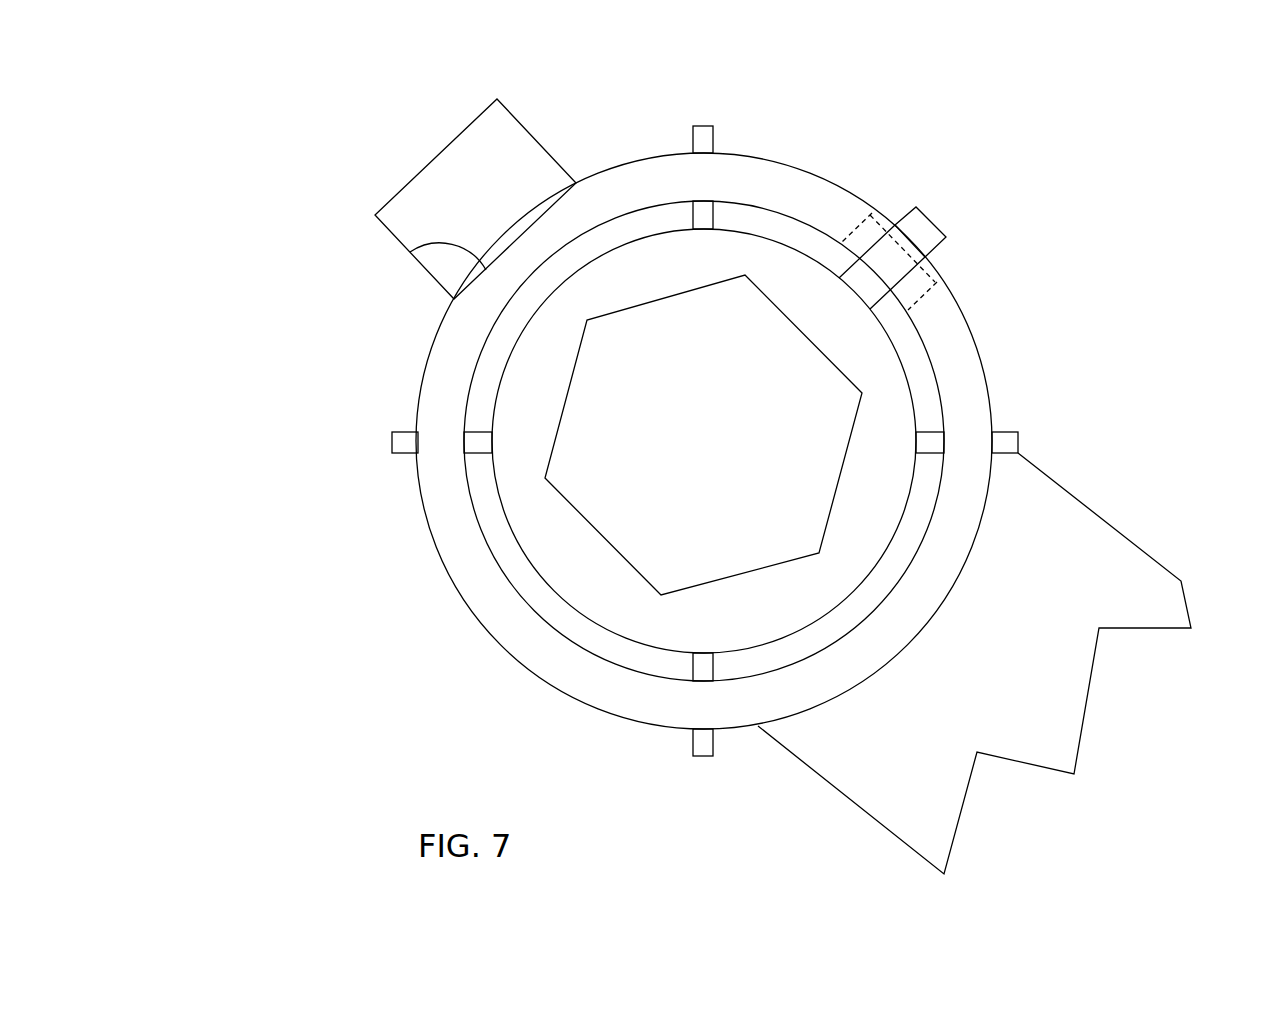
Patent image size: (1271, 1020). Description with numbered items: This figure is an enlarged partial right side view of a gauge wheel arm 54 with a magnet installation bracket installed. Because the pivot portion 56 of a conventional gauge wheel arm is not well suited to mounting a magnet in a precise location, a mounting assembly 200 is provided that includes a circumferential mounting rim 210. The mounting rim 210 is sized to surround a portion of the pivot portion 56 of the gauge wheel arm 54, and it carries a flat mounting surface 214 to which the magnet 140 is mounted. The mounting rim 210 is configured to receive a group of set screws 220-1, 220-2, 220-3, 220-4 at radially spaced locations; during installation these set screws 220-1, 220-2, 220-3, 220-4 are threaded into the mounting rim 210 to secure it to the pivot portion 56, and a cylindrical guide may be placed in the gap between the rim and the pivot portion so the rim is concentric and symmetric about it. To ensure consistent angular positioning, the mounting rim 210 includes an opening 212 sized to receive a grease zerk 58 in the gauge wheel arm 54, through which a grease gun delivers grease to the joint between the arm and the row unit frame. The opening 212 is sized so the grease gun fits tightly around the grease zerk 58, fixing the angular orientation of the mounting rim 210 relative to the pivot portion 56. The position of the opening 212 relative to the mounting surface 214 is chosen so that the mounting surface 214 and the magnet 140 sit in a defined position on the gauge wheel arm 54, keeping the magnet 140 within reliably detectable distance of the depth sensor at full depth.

The mounting assembly 200 is at (239, 278).
The mounting rim 210 is at (515, 662).
The pivot portion 56 is at (503, 375).
The set screw 220-1 is at (405, 453).
The set screw 220-2 is at (713, 140).
The set screw 220-3 is at (1008, 432).
The set screw 220-4 is at (693, 742).
The magnet 140 is at (562, 167).
The mounting surface 214 is at (410, 252).
The grease zerk 58 is at (932, 220).
The opening 212 is at (883, 207).
The gauge wheel arm 54 is at (1065, 485).